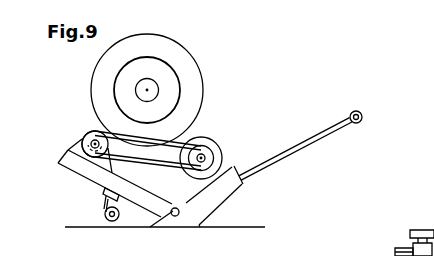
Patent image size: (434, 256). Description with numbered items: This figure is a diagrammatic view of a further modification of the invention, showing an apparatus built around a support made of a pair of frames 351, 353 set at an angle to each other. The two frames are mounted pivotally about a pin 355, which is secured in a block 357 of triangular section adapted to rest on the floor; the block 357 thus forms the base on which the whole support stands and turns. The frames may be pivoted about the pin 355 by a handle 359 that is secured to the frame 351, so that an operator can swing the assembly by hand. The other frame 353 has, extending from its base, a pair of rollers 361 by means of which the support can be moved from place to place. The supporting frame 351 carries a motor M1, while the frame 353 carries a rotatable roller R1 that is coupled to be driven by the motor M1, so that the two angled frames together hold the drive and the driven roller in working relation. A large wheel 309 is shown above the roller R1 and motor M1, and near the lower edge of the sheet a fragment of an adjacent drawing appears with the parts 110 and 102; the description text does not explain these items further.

The wheel 309 is at (170, 48).
The rotatable roller R1 is at (90, 134).
The motor M1 is at (208, 143).
The frame 353 is at (85, 167).
The pin 355 is at (175, 207).
The frame 351 is at (214, 193).
The block 357 is at (166, 222).
The rollers 361 is at (104, 213).
The handle 359 is at (298, 147).
The component of adjacent figure 110 is at (415, 249).
The component of adjacent figure 102 is at (380, 252).